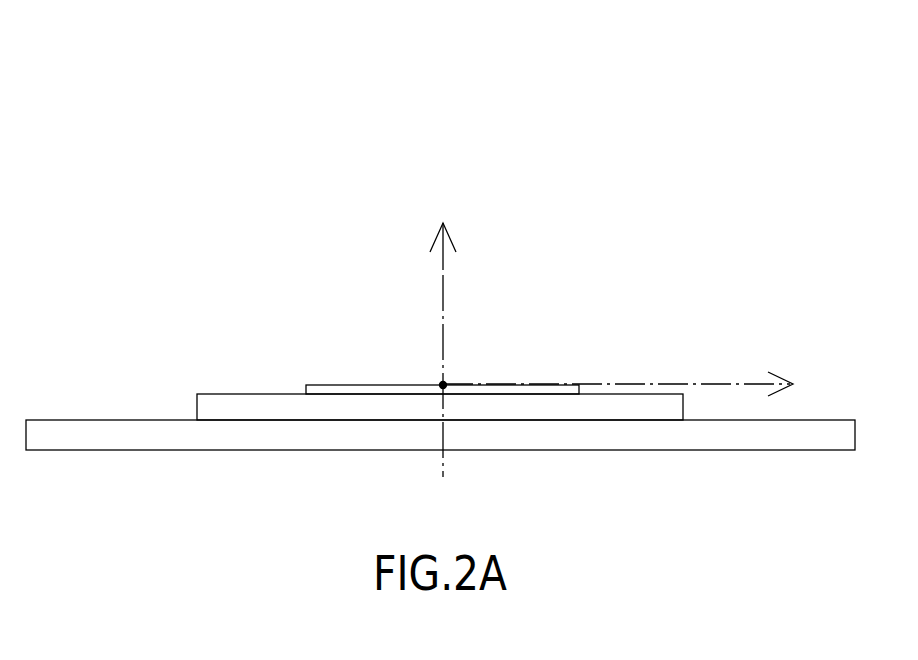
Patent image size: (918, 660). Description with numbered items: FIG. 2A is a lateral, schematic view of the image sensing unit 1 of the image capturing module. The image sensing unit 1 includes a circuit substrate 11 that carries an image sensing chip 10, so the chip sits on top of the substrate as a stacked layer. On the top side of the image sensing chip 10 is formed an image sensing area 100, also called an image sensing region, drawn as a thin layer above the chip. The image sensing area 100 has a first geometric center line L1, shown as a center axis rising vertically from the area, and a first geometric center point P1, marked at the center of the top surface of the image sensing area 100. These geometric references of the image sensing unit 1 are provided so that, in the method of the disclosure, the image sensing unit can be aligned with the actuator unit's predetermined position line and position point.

The image sensing unit 1 is at (51, 56).
The circuit substrate 11 is at (114, 438).
The image sensing chip 10 is at (231, 406).
The image sensing area 100 is at (342, 390).
The first geometric center line L1 is at (447, 303).
The first geometric center point P1 is at (446, 382).